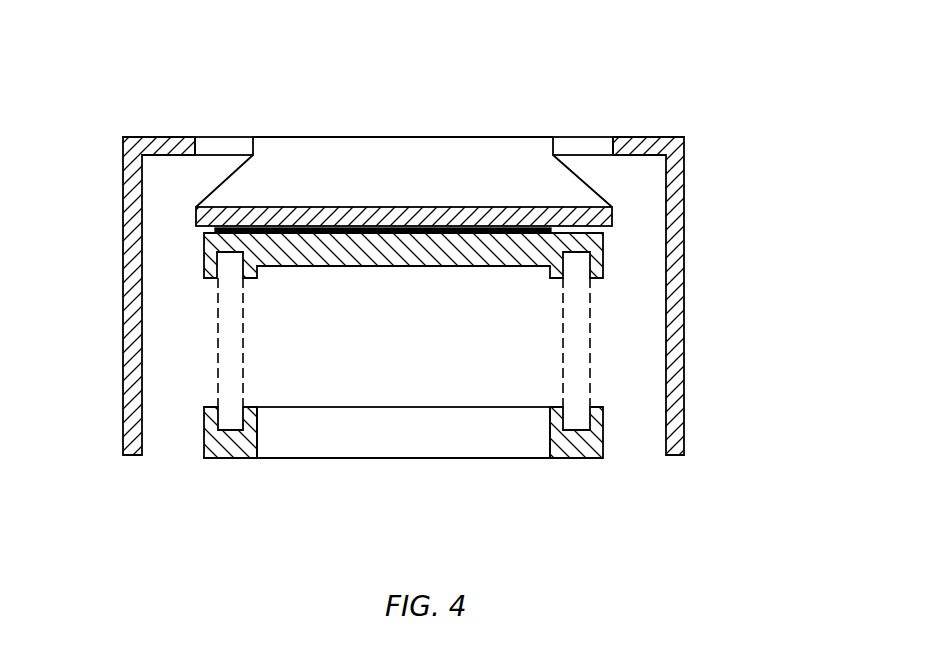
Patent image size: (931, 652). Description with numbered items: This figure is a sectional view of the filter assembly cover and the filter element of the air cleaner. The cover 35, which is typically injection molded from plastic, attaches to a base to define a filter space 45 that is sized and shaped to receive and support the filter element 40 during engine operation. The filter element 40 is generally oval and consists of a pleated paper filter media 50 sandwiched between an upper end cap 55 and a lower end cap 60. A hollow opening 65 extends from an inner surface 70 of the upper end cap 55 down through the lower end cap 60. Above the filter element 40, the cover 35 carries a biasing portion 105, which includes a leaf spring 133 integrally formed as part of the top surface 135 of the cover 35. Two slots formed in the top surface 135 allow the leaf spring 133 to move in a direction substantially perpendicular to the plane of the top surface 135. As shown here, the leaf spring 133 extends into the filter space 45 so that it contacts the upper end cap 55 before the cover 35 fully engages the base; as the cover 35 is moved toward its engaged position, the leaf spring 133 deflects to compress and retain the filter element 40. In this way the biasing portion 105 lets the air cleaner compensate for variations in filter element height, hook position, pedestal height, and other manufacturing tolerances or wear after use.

The biasing portion 105 is at (459, 283).
The cover 35 is at (680, 226).
The top surface 135 is at (173, 137).
The leaf spring 133 is at (293, 207).
The upper end cap 55 is at (603, 240).
The inner surface 70 is at (470, 268).
The pleated paper filter media 50 is at (590, 330).
The lower end cap 60 is at (250, 443).
The hollow opening 65 is at (377, 413).
The filter element 40 is at (177, 517).
The filter space 45 is at (645, 482).